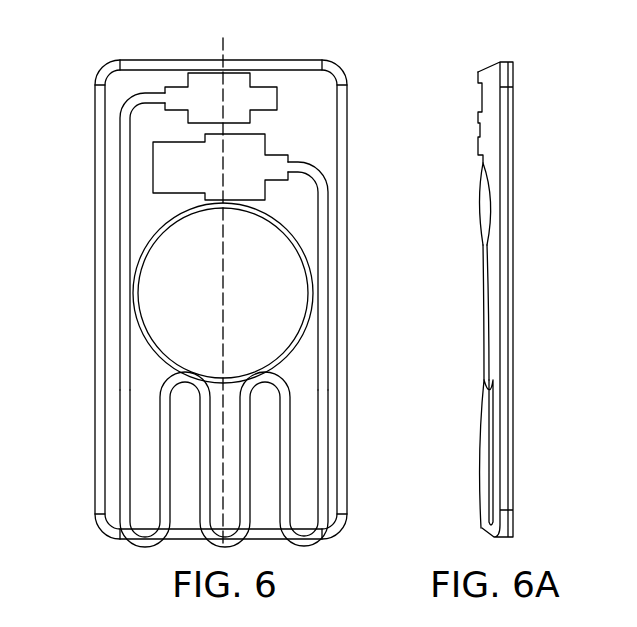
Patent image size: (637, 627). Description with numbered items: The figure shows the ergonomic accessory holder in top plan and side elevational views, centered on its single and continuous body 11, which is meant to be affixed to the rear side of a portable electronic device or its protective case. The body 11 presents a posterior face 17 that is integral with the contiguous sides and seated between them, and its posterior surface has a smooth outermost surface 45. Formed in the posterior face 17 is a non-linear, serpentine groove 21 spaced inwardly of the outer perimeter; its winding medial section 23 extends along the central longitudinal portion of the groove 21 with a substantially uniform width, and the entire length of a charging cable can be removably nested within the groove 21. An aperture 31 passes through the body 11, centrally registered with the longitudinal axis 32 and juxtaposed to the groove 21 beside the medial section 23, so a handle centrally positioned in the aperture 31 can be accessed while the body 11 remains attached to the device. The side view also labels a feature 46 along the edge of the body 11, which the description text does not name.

In FIG. 6, the body 11 is at (361, 100).
In FIG. 6A, the body 11 is at (542, 101).
In FIG. 6, the posterior face 17 is at (303, 96).
In FIG. 6A, the posterior face 17 is at (476, 78).
In FIG. 6, the groove 21 is at (323, 165).
In FIG. 6, the medial section 23 is at (238, 513).
In FIG. 6, the aperture 31 is at (291, 288).
In FIG. 6, the longitudinal axis 32 is at (220, 258).
In FIG. 6, the smooth outermost surface 45 is at (137, 153).
In FIG. 6A, the trace side profile 46 is at (485, 378).